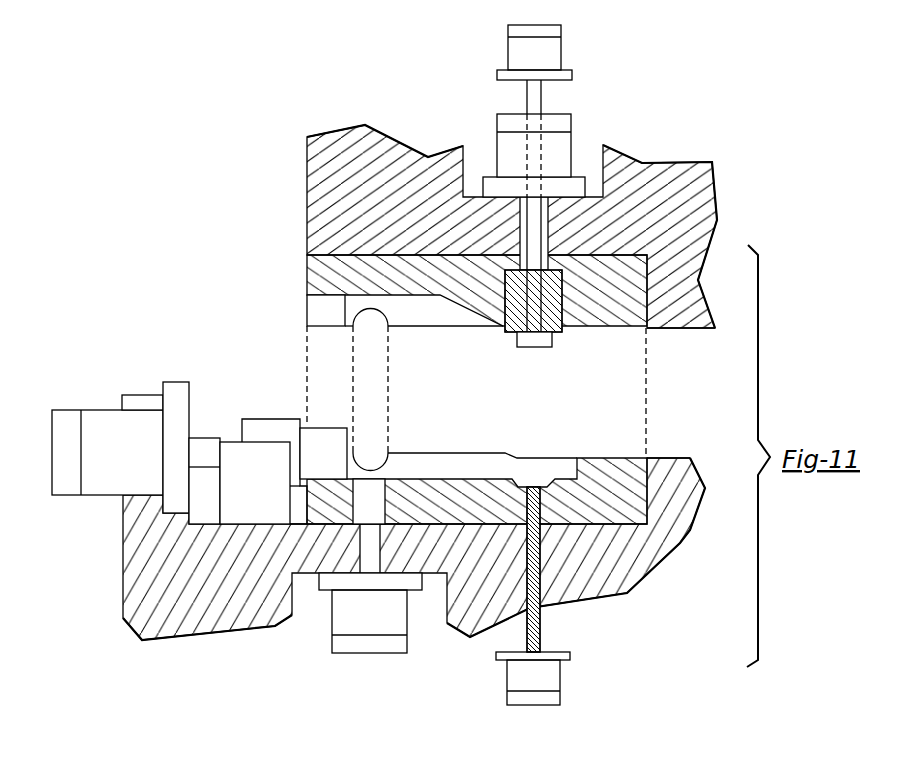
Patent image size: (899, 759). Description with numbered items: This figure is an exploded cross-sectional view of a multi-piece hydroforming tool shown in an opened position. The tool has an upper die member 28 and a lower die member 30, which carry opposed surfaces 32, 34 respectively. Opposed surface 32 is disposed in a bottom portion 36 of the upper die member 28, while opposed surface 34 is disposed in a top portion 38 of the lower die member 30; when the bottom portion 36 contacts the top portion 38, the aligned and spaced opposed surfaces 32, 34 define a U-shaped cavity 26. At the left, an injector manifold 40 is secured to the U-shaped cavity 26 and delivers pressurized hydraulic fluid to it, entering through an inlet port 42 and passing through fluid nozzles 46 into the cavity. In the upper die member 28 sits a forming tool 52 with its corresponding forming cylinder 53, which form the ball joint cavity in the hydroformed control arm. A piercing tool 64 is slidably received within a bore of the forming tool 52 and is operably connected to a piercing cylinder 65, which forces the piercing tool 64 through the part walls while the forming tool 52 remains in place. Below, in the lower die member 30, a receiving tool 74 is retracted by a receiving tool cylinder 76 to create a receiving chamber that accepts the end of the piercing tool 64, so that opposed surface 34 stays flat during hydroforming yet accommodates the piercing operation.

The U-shaped cavity 26 is at (288, 404).
The upper die member 28 is at (307, 202).
The lower die member 30 is at (123, 582).
The opposed surface 32 is at (452, 305).
The opposed surface 34 is at (467, 479).
The bottom portion 36 is at (683, 328).
The top portion 38 is at (677, 458).
The injector manifold 40 is at (116, 384).
The inlet port 42 is at (62, 417).
The fluid nozzle 46 is at (322, 428).
The forming tool 52 is at (563, 333).
The forming cylinder 53 is at (567, 125).
The piercing tool 64 is at (532, 347).
The piercing cylinder 65 is at (545, 29).
The receiving tool 74 is at (540, 627).
The receiving tool cylinder 76 is at (555, 678).